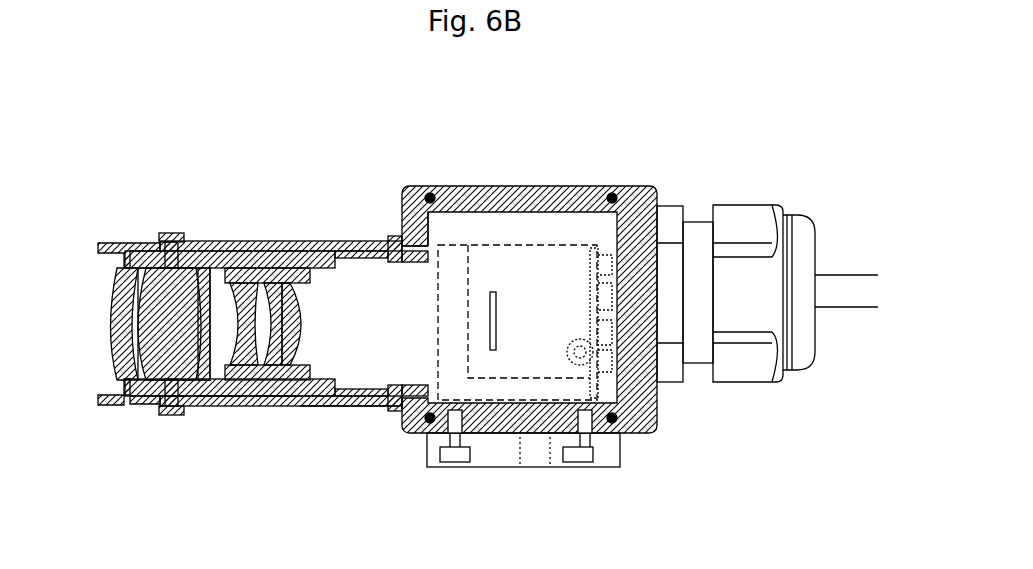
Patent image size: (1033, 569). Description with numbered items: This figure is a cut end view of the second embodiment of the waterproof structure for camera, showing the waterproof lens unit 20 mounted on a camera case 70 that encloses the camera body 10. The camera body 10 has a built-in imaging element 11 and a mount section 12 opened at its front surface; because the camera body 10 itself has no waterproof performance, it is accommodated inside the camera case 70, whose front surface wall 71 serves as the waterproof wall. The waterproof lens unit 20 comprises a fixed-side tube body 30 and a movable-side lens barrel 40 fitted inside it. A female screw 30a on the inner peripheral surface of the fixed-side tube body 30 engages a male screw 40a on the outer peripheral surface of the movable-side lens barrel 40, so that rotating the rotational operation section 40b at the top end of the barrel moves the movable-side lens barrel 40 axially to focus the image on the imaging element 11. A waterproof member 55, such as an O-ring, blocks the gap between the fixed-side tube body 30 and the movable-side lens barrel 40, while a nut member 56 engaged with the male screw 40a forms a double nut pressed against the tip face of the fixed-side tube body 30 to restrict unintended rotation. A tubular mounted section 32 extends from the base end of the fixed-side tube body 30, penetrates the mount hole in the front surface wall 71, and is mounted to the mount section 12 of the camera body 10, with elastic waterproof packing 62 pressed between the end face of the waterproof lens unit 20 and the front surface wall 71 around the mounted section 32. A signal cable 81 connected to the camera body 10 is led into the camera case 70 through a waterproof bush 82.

The camera body 10 is at (562, 247).
The imaging element 11 is at (500, 318).
The mount section 12 is at (432, 243).
The waterproof lens unit 20 is at (263, 291).
The fixed-side tube body 30 is at (222, 240).
The female screw 30a is at (345, 395).
The mounted section 32 is at (395, 263).
The movable-side lens barrel 40 is at (225, 407).
The male screw 40a is at (248, 407).
The rotational operation section 40b is at (150, 240).
The waterproof member 55 is at (280, 240).
The nut member 56 is at (170, 414).
The waterproof packing 62 is at (396, 434).
The camera case 70 is at (522, 186).
The front surface wall 71 is at (394, 214).
The signal cable 81 is at (843, 311).
The bush 82 is at (742, 384).